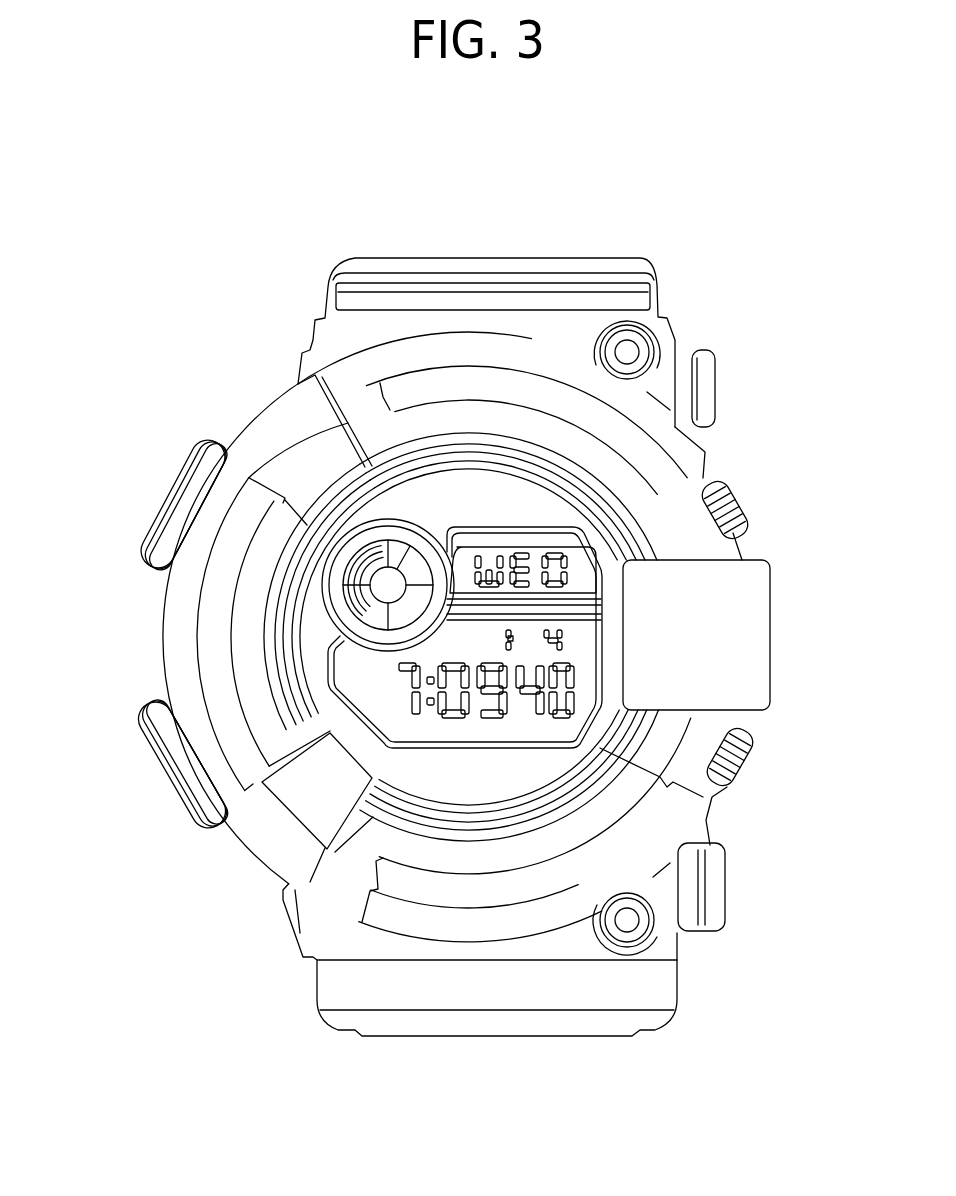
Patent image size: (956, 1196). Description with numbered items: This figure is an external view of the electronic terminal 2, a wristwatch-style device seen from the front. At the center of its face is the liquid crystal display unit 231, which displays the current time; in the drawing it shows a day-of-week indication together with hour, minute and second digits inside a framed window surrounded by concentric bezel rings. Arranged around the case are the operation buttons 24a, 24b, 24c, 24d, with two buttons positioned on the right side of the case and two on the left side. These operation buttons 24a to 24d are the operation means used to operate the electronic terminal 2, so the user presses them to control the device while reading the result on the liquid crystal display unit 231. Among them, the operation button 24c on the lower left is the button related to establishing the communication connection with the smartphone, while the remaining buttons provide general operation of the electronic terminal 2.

The electronic terminal 2 is at (590, 200).
The operation button 24a is at (737, 505).
The operation button 24b is at (750, 760).
The operation button 24c is at (160, 800).
The operation button 24d is at (163, 490).
The liquid crystal display unit 231 is at (540, 768).